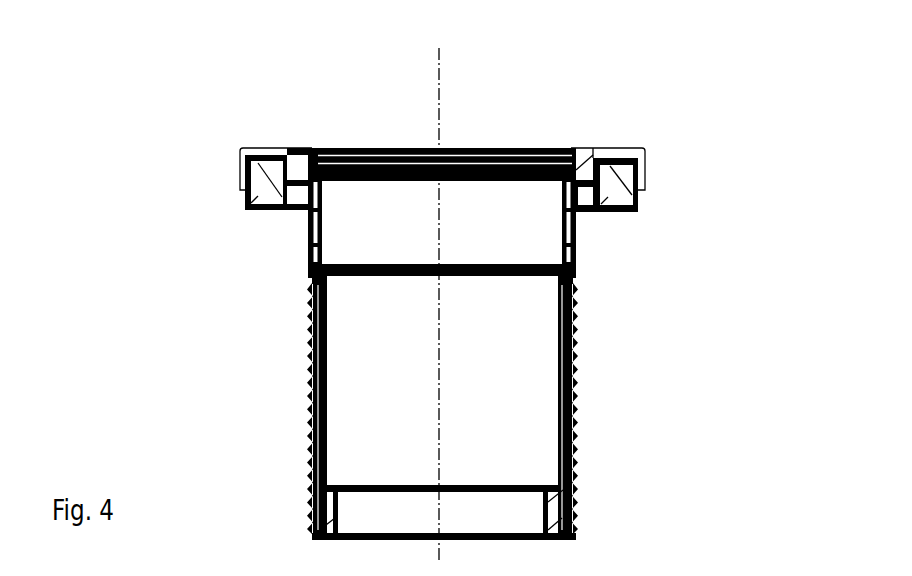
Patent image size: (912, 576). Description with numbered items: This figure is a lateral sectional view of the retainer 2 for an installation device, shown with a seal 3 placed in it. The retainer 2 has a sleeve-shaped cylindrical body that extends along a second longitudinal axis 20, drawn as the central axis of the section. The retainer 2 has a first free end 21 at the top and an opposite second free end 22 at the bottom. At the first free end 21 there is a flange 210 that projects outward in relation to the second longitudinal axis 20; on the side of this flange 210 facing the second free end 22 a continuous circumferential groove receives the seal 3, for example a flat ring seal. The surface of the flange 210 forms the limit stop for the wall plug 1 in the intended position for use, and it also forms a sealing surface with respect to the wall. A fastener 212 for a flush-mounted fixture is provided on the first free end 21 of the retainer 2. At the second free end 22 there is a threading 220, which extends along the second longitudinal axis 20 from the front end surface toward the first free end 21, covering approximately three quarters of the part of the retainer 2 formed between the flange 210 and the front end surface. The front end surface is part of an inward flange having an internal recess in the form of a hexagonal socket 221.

The wall plug 1 is at (126, 575).
The retainer 2 is at (118, 64).
The seal 3 is at (267, 190).
The second longitudinal axis 20 is at (440, 60).
The first free end 21 is at (680, 177).
The second free end 22 is at (678, 387).
The flange 210 is at (250, 148).
The fastener 212 is at (383, 165).
The threading 220 is at (310, 378).
The hexagonal socket 221 is at (367, 512).